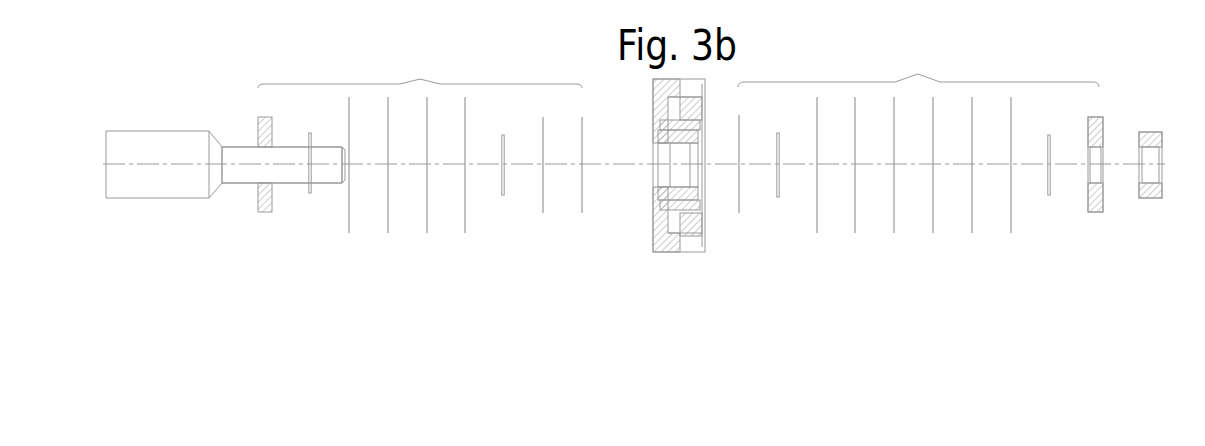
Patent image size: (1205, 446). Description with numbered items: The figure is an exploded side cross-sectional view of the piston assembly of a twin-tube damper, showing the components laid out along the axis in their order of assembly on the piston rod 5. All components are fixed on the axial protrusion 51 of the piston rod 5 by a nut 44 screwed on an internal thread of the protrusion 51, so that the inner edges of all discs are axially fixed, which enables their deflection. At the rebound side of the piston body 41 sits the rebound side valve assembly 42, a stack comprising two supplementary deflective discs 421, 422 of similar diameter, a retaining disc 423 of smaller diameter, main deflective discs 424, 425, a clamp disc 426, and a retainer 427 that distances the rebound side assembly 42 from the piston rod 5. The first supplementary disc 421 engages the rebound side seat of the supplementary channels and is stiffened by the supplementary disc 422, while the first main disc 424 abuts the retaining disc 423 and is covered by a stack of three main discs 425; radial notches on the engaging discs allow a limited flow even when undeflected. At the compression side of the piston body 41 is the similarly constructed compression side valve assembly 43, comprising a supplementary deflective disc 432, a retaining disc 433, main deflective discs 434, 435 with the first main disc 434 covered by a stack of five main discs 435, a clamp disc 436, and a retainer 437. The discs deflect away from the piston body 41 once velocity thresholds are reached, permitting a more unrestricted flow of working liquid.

The piston rod 5 is at (183, 195).
The axial protrusion 51 is at (229, 177).
The rebound side valve assembly 42 is at (420, 68).
The retainer 427 is at (265, 212).
The clamp disc 426 is at (310, 193).
The main deflective discs 425 is at (349, 233).
The first main disc 424 is at (465, 233).
The retaining disc 423 is at (503, 195).
The supplementary deflective disc 422 is at (543, 213).
The first supplementary disc 421 is at (582, 213).
The piston body 41 is at (697, 250).
The compression side valve assembly 43 is at (918, 67).
The supplementary deflective disc 432 is at (739, 213).
The retaining disc 433 is at (778, 197).
The first main disc 434 is at (817, 233).
The main deflective discs 435 is at (855, 233).
The clamp disc 436 is at (1049, 195).
The retainer 437 is at (1093, 212).
The nut 44 is at (1152, 198).